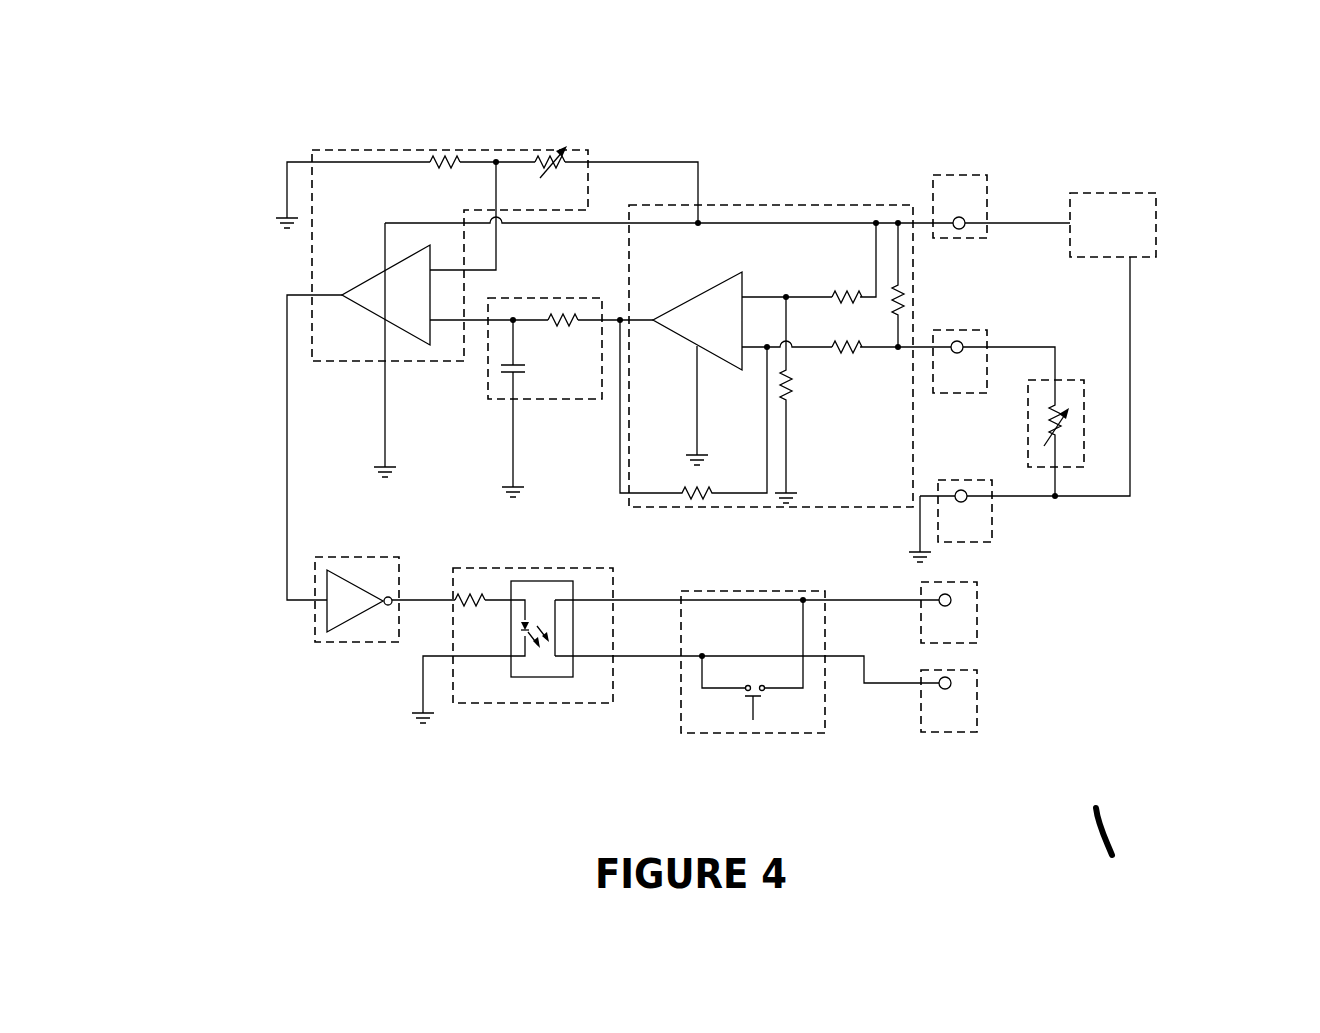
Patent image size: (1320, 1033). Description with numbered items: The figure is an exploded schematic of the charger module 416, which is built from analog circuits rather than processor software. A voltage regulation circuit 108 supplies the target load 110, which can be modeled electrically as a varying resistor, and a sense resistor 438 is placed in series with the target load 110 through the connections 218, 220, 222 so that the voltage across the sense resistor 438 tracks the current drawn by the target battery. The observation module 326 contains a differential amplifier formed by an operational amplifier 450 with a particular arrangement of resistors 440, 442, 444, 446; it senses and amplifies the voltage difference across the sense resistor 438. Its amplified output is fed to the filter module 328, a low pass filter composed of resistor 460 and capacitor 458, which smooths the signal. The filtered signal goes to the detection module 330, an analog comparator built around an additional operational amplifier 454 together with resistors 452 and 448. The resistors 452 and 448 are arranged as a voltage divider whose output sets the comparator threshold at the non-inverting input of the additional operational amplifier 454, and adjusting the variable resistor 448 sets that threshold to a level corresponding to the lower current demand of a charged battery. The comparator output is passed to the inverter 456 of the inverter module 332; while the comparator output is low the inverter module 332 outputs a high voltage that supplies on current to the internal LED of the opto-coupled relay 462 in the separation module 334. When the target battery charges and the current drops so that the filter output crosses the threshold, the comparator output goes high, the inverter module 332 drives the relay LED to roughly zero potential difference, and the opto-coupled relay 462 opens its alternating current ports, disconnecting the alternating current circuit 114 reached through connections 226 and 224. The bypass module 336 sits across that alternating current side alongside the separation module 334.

The detection module 330 is at (348, 155).
The resistor 452 is at (442, 158).
The variable resistor 448 is at (544, 158).
The additional operational amplifier 454 is at (352, 281).
The filter module 328 is at (495, 398).
The resistor 460 is at (561, 312).
The capacitor 458 is at (500, 370).
The observation module 326 is at (776, 206).
The operational amplifier 450 is at (680, 297).
The resistor 440 is at (842, 294).
The resistor 442 is at (850, 352).
The resistor 444 is at (790, 396).
The resistor 446 is at (700, 500).
The sense resistor 438 is at (903, 300).
The connection 218 is at (947, 202).
The connection 220 is at (945, 389).
The connection 222 is at (953, 536).
The connection 226 is at (935, 636).
The connection 224 is at (935, 726).
The voltage regulation circuit 108 is at (1135, 210).
The target load 110 is at (1075, 440).
The inverter module 332 is at (320, 630).
The inverter 456 is at (352, 622).
The separation module 334 is at (462, 702).
The opto-coupled relay 462 is at (542, 678).
The bypass module 336 is at (733, 720).
The alternating current circuit 114 is at (888, 684).
The charger module 416 is at (1126, 852).